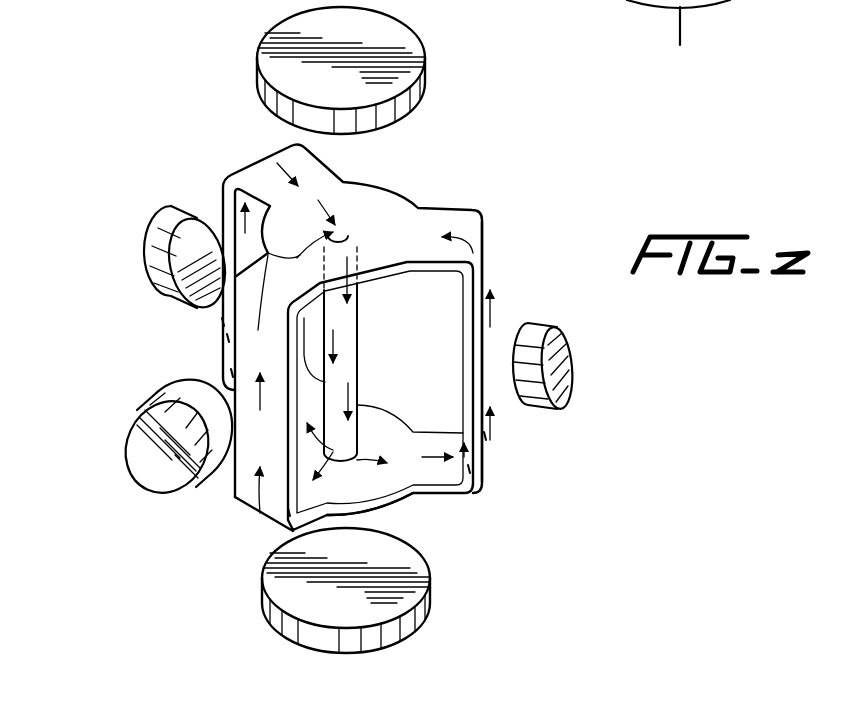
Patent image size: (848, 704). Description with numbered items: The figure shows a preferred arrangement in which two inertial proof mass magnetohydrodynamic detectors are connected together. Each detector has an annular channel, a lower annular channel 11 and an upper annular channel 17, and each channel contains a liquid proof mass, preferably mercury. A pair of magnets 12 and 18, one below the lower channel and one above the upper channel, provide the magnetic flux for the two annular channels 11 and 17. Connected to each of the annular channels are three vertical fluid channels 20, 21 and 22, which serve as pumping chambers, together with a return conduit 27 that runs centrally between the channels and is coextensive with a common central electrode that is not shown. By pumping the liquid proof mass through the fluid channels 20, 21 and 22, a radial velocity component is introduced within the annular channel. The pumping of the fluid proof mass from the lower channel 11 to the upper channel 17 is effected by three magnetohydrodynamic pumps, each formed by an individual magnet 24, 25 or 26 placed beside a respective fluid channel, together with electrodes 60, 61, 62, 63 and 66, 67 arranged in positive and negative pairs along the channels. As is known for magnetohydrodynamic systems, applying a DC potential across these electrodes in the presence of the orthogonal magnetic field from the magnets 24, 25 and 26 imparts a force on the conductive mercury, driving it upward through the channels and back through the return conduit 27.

The lower annular channel 11 is at (402, 498).
The magnet 12 is at (430, 580).
The upper annular channel 17 is at (410, 192).
The magnet 18 is at (405, 40).
The vertical fluid channel 20 is at (478, 210).
The vertical fluid channel 21 is at (272, 362).
The vertical fluid channel 22 is at (260, 166).
The magnet 24 is at (570, 372).
The magnet 25 is at (141, 447).
The magnet 26 is at (163, 232).
The return conduit 27 is at (360, 357).
The electrode 60 is at (487, 436).
The electrode 61 is at (470, 469).
The electrode 62 is at (290, 511).
The electrode 63 is at (232, 373).
The electrode 66 is at (229, 338).
The electrode 67 is at (224, 322).